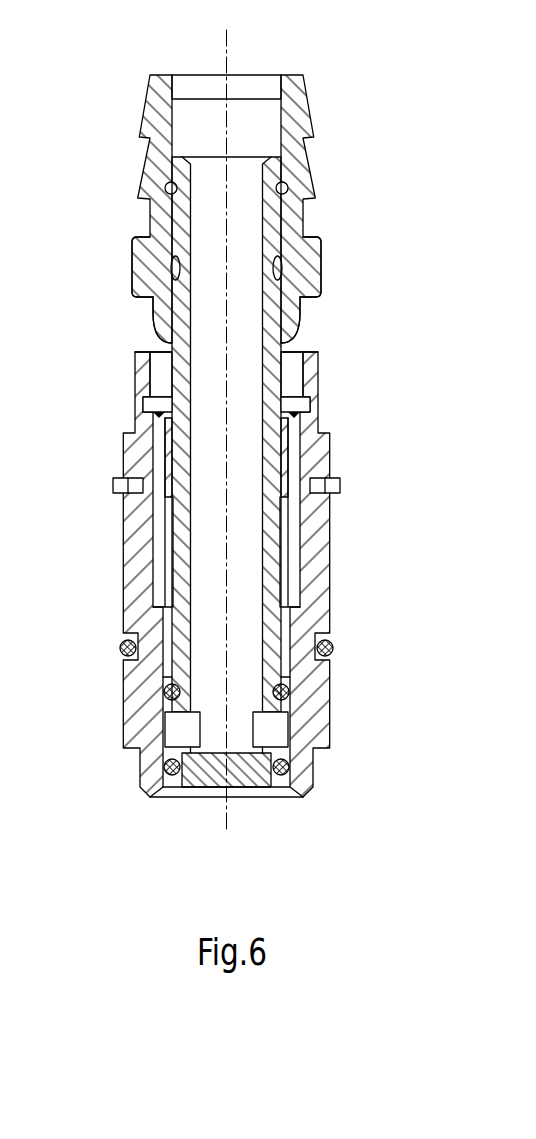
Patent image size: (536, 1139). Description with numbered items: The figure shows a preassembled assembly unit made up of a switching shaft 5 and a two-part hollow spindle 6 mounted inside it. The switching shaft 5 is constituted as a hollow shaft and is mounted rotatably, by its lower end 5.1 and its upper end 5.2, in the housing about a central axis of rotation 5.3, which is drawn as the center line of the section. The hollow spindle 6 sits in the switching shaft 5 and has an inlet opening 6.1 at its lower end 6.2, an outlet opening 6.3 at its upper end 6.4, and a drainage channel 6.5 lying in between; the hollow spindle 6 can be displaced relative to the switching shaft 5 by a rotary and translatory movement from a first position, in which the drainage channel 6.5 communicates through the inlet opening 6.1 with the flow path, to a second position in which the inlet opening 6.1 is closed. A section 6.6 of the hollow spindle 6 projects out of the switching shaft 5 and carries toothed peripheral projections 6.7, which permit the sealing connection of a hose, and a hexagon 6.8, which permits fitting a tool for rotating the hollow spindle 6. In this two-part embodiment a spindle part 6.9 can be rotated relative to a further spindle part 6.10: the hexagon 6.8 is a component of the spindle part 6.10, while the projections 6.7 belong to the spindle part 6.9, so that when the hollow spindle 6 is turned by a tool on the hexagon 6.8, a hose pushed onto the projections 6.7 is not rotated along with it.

The switching shaft 5 is at (242, 449).
The lower end 5.1 is at (150, 798).
The upper end 5.2 is at (137, 351).
The axis of rotation 5.3 is at (228, 553).
The hollow spindle 6 is at (243, 360).
The inlet opening 6.1 is at (257, 727).
The lower end 6.2 is at (253, 798).
The outlet opening 6.3 is at (264, 85).
The upper end 6.4 is at (162, 76).
The drainage channel 6.5 is at (185, 416).
The section 6.6 is at (132, 273).
The toothed peripheral projections 6.7 is at (305, 200).
The hexagon 6.8 is at (150, 303).
The spindle part 6.9 is at (305, 268).
The further spindle part 6.10 is at (275, 315).